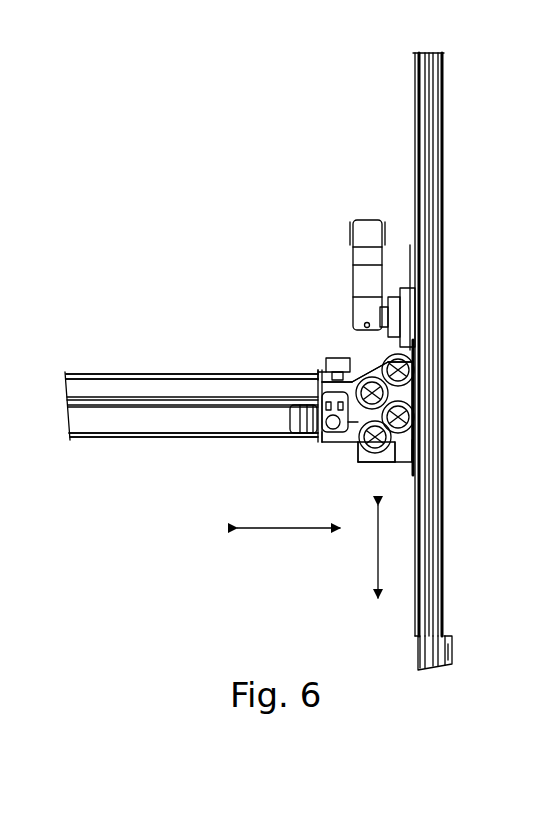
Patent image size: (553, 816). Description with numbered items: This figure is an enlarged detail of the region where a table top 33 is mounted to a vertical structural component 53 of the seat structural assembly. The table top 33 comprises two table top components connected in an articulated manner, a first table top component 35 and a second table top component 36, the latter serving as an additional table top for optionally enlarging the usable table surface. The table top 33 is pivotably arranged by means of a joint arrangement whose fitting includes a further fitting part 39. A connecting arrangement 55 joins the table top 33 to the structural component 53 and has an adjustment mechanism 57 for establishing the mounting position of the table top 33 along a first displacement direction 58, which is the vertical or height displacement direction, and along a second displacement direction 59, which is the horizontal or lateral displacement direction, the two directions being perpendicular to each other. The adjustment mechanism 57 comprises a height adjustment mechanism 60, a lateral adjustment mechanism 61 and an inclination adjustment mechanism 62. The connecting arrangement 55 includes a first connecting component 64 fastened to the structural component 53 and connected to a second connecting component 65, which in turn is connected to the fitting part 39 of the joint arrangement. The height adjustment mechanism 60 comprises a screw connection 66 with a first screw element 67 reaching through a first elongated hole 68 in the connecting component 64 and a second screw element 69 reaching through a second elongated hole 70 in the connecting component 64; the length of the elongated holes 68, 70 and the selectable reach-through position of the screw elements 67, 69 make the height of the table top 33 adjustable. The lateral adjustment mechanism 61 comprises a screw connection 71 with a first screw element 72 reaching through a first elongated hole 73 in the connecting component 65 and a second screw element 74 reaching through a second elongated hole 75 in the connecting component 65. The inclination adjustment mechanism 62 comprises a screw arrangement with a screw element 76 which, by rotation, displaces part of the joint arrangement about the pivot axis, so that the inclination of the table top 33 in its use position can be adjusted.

The table top 33 is at (154, 452).
The first table top component 35 is at (88, 428).
The second table top component 36 is at (97, 385).
The further fitting part 39 is at (320, 448).
The structural component 53 is at (441, 80).
The connecting arrangement 55 is at (323, 333).
The adjustment mechanism 57 is at (342, 346).
The first displacement direction 58 is at (378, 548).
The second displacement direction 59 is at (262, 530).
The height adjustment mechanism 60 is at (415, 340).
The lateral adjustment mechanism 61 is at (362, 342).
The inclination adjustment mechanism 62 is at (327, 362).
The first connecting component 64 is at (405, 457).
The second connecting component 65 is at (330, 438).
The screw connection 66 is at (418, 372).
The first screw element 67 is at (410, 420).
The first elongated hole 68 is at (433, 447).
The second screw element 69 is at (412, 380).
The second elongated hole 70 is at (406, 362).
The screw connection 71 is at (352, 460).
The first screw element 72 is at (368, 461).
The first elongated hole 73 is at (397, 463).
The second screw element 74 is at (318, 372).
The second elongated hole 75 is at (412, 403).
The screw element 76 is at (320, 358).